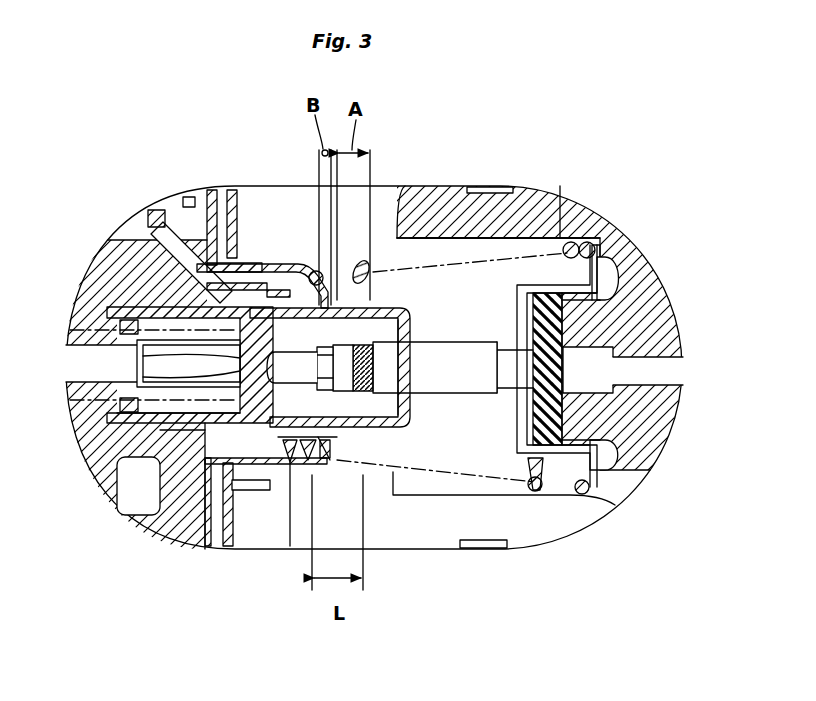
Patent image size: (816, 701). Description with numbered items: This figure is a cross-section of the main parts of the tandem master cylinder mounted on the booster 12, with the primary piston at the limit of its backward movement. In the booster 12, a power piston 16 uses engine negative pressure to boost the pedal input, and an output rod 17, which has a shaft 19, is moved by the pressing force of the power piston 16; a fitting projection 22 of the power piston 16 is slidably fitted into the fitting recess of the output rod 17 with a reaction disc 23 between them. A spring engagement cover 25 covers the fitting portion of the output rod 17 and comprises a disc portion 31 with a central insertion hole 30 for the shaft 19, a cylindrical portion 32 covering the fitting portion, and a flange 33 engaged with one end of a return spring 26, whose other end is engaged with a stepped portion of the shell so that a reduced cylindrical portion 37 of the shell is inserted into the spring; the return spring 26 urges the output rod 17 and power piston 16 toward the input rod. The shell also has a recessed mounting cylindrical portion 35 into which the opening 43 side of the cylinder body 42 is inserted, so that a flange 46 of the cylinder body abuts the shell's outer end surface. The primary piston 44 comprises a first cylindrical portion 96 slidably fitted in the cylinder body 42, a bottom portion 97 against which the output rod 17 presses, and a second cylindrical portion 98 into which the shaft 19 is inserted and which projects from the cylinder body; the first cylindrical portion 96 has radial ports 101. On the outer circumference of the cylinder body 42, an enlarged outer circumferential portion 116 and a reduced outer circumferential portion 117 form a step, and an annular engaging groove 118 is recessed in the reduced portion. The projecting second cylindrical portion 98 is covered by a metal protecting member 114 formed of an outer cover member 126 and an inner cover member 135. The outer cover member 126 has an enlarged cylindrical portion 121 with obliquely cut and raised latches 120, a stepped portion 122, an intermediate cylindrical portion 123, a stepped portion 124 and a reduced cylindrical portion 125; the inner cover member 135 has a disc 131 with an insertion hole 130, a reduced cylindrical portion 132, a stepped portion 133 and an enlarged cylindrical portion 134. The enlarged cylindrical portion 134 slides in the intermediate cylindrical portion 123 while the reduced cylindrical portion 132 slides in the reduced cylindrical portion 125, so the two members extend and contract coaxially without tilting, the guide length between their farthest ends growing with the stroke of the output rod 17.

The booster 12 is at (634, 220).
The power piston 16 is at (528, 206).
The output rod 17 is at (546, 442).
The shaft 19 is at (558, 447).
The fitting projection 22 is at (648, 333).
The reaction disc 23 is at (665, 312).
The spring engagement cover 25 is at (593, 490).
The return spring 26 is at (589, 234).
The insertion hole 30 is at (490, 236).
The disc portion 31 is at (545, 226).
The cylindrical portion 32 is at (576, 242).
The flange 33 is at (637, 233).
The mounting cylindrical portion 35 is at (160, 470).
The reduced cylindrical portion 37 is at (311, 478).
The cylinder body 42 is at (117, 470).
The opening 43 is at (150, 240).
The primary piston 44 is at (105, 418).
The flange 46 is at (184, 516).
The first cylindrical portion 96 is at (125, 314).
The bottom portion 97 is at (145, 365).
The second cylindrical portion 98 is at (398, 396).
The radial ports 101 is at (126, 326).
The protecting member 114 is at (414, 303).
The enlarged outer circumferential portion 116 is at (155, 210).
The reduced outer circumferential portion 117 is at (204, 266).
The annular engaging groove 118 is at (231, 242).
The latches 120 is at (236, 486).
The enlarged cylindrical portion 121 is at (208, 480).
The stepped portion 122 is at (268, 462).
The intermediate cylindrical portion 123 is at (290, 458).
The stepped portion 124 is at (335, 460).
The reduced cylindrical portion 125 is at (345, 457).
The outer cover member 126 is at (303, 462).
The insertion hole 130 is at (517, 447).
The disc 131 is at (410, 432).
The reduced cylindrical portion 132 is at (365, 262).
The stepped portion 133 is at (252, 284).
The enlarged cylindrical portion 134 is at (313, 271).
The inner cover member 135 is at (382, 303).